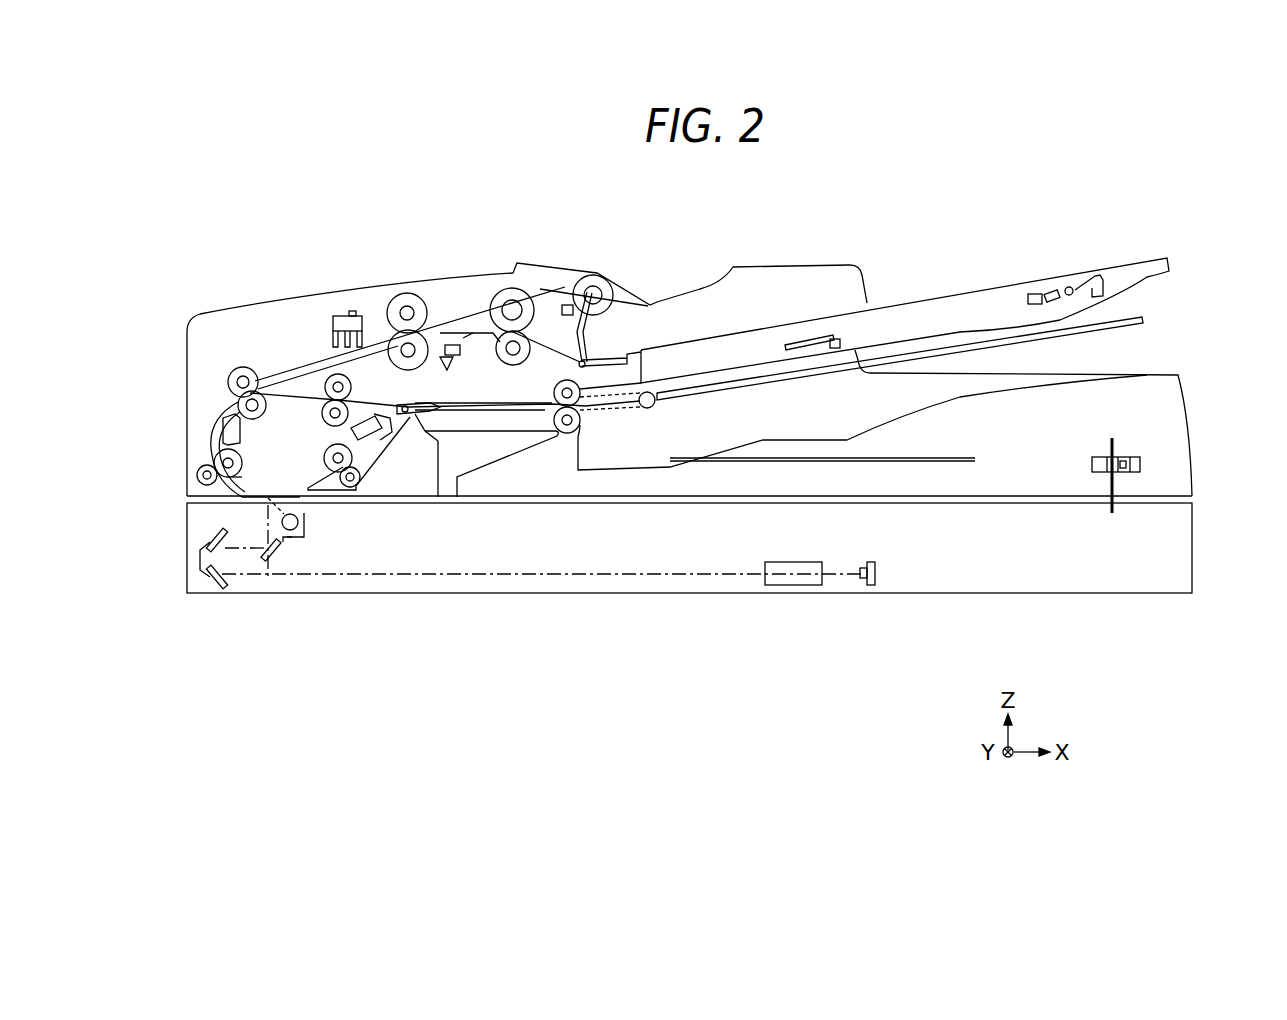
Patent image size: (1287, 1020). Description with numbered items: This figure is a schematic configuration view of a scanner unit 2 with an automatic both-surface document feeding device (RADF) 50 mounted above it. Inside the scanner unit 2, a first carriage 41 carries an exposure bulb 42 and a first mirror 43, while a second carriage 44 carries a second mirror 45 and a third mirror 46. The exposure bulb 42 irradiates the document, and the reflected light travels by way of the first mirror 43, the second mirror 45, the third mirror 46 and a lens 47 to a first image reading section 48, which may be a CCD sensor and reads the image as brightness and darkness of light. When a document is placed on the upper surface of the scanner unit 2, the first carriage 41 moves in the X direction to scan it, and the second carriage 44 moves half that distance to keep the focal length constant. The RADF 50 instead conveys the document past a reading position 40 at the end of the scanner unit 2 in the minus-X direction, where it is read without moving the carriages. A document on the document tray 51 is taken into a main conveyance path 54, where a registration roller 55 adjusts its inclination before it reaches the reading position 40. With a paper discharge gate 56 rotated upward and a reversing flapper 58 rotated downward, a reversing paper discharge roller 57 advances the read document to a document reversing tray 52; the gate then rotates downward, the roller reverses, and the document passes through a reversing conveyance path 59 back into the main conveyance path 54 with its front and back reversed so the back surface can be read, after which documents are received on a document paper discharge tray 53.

The scanner unit 2 is at (1192, 544).
The reading position 40 is at (244, 522).
The first carriage 41 is at (305, 527).
The exposure bulb 42 is at (290, 530).
The first mirror 43 is at (270, 563).
The second carriage 44 is at (212, 540).
The second mirror 45 is at (200, 558).
The third mirror 46 is at (213, 578).
The lens 47 is at (798, 585).
The first image reading section 48 is at (860, 585).
The automatic both-surface document feeding device (RADF) 50 is at (1212, 362).
The document tray 51 is at (1073, 272).
The document reversing tray 52 is at (905, 348).
The document paper discharge tray 53 is at (960, 393).
The main conveyance path 54 is at (290, 367).
The registration roller 55 is at (428, 300).
The paper discharge gate 56 is at (405, 420).
The reversing paper discharge roller 57 is at (552, 405).
The reversing flapper 58 is at (590, 405).
The reversing conveyance path 59 is at (372, 400).